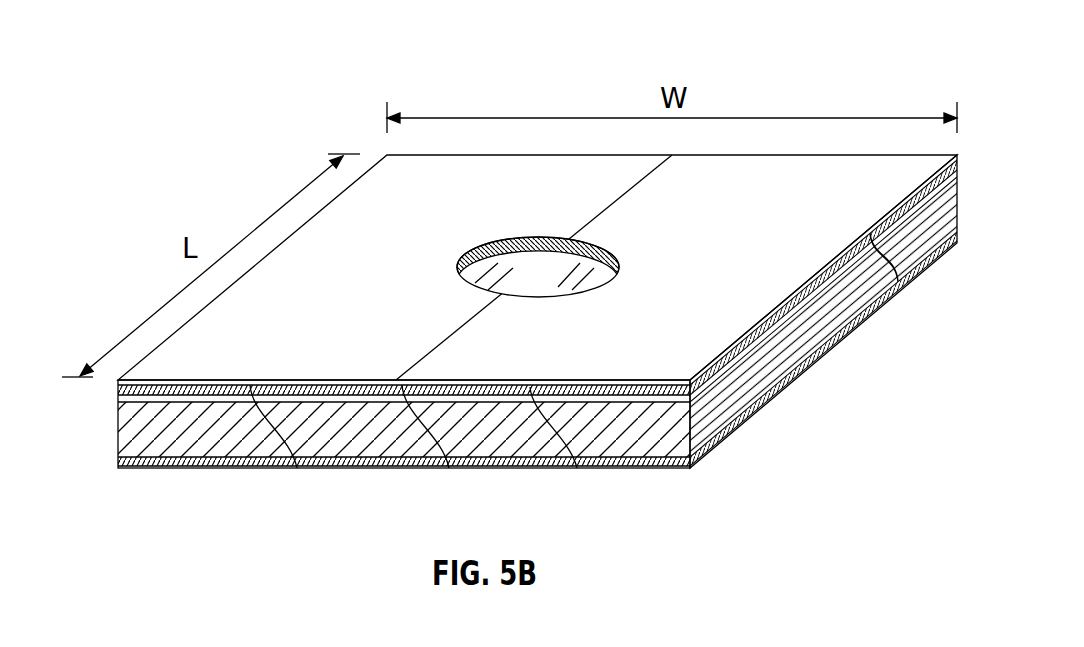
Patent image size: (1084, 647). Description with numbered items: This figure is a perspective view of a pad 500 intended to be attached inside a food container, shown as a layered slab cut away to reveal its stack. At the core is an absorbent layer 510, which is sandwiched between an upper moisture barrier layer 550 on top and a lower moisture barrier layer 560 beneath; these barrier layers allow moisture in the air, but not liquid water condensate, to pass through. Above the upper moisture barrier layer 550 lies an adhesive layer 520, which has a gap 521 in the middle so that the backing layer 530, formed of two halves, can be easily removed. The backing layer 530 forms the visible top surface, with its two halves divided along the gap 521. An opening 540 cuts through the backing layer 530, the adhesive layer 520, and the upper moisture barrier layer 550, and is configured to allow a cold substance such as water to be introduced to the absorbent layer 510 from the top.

The pad 500 is at (796, 27).
The absorbent layer 510 is at (795, 338).
The adhesive layer 520 is at (297, 468).
The gap 521 is at (449, 468).
The backing layer 530 is at (398, 275).
The opening 540 is at (559, 288).
The upper moisture barrier layer 550 is at (118, 392).
The lower moisture barrier layer 560 is at (118, 462).